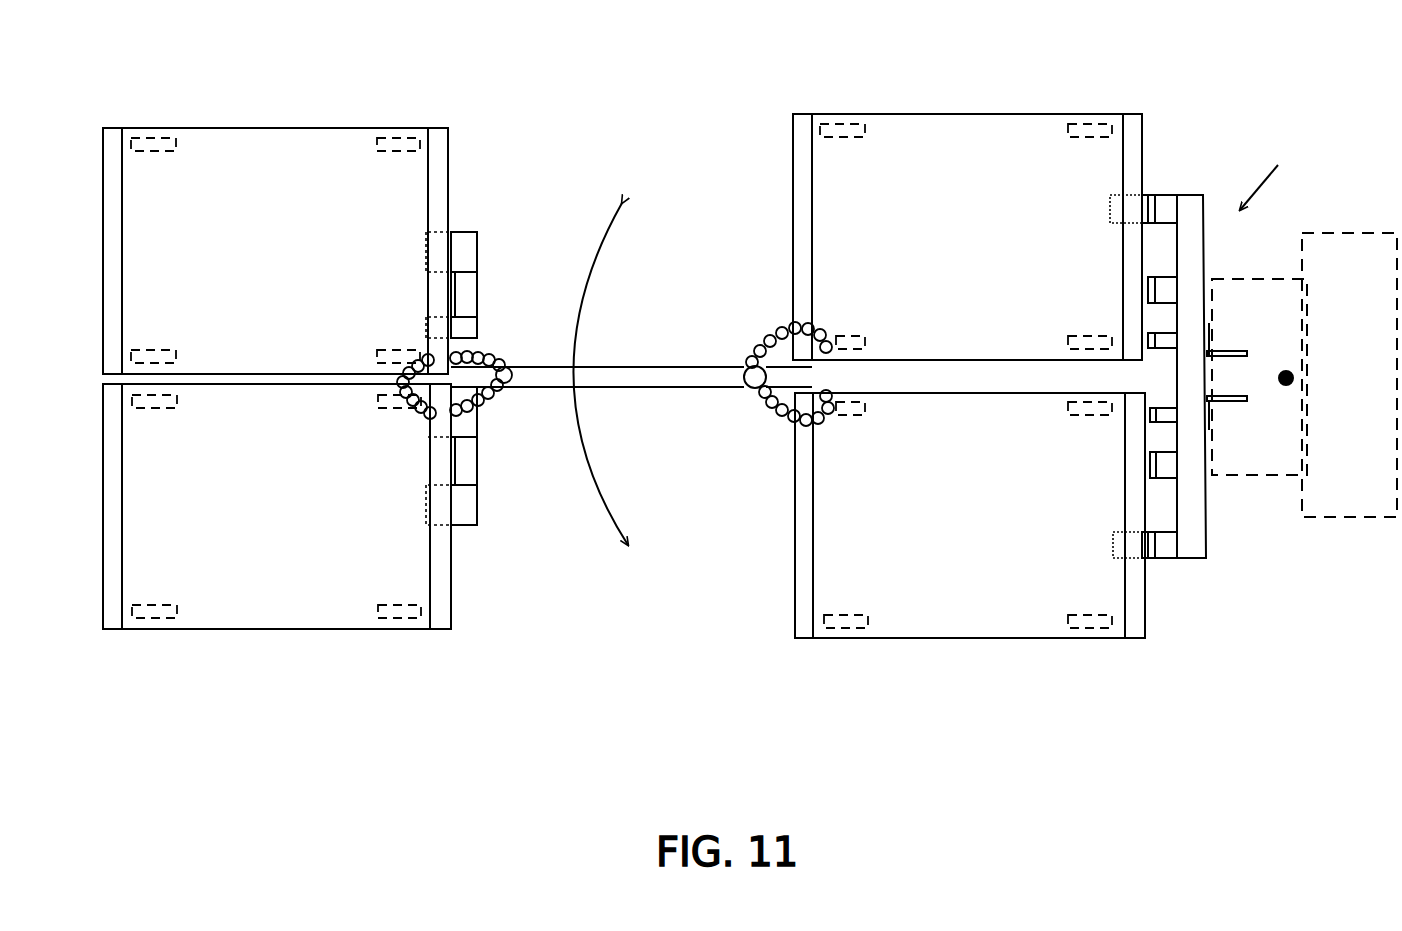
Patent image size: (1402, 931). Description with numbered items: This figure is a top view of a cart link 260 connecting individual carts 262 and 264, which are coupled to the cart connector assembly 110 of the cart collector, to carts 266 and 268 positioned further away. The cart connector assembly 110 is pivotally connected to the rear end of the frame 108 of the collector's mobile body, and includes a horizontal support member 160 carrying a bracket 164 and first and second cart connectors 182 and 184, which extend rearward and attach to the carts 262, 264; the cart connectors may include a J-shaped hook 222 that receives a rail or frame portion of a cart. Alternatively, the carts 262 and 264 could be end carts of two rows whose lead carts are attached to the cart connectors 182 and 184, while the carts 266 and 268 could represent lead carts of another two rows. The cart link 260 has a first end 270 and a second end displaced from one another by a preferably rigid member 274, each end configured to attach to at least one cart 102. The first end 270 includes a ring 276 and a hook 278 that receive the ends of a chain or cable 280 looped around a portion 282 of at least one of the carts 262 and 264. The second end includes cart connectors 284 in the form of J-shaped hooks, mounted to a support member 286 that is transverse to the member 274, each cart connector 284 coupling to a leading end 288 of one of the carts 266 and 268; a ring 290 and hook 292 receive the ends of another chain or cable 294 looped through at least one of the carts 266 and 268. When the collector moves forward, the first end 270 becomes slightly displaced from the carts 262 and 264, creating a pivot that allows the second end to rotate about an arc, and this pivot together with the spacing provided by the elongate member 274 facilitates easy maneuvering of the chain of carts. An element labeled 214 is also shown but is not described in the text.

The carts 102 is at (876, 115).
The frame 108 is at (1330, 243).
The cart connector assembly 110 is at (1278, 164).
The horizontal support member 160 is at (1192, 220).
The bracket 164 is at (1248, 340).
The first cart connector 182 is at (1162, 177).
The second cart connector 184 is at (1172, 567).
The power lead 214 is at (1290, 385).
The J-shaped hook 222 is at (477, 463).
The cart link 260 is at (648, 392).
The cart 262 is at (1008, 82).
The cart 264 is at (967, 633).
The cart 266 is at (275, 138).
The cart 268 is at (281, 617).
The first end 270 is at (797, 378).
The rigid member 274 is at (628, 367).
The ring 276 is at (768, 400).
The hook 278 is at (745, 365).
The chain or cable 280 is at (815, 325).
The portion 282 is at (808, 225).
The cart connectors 284 is at (463, 236).
The support member 286 is at (593, 250).
The leading end 288 is at (447, 157).
The ring 290 is at (512, 362).
The hook 292 is at (505, 400).
The chain or cable 294 is at (422, 405).